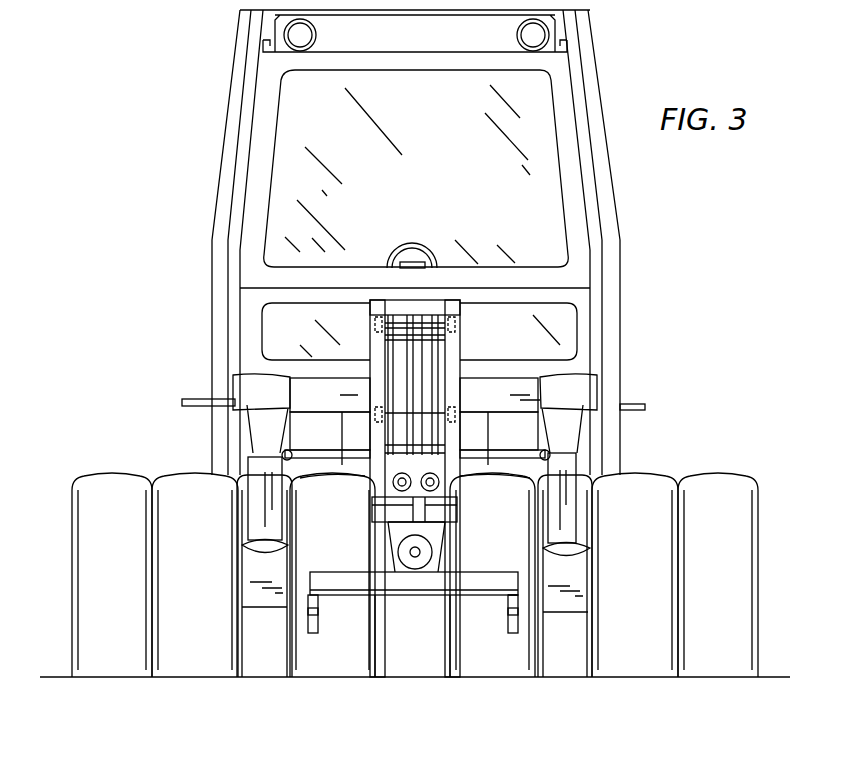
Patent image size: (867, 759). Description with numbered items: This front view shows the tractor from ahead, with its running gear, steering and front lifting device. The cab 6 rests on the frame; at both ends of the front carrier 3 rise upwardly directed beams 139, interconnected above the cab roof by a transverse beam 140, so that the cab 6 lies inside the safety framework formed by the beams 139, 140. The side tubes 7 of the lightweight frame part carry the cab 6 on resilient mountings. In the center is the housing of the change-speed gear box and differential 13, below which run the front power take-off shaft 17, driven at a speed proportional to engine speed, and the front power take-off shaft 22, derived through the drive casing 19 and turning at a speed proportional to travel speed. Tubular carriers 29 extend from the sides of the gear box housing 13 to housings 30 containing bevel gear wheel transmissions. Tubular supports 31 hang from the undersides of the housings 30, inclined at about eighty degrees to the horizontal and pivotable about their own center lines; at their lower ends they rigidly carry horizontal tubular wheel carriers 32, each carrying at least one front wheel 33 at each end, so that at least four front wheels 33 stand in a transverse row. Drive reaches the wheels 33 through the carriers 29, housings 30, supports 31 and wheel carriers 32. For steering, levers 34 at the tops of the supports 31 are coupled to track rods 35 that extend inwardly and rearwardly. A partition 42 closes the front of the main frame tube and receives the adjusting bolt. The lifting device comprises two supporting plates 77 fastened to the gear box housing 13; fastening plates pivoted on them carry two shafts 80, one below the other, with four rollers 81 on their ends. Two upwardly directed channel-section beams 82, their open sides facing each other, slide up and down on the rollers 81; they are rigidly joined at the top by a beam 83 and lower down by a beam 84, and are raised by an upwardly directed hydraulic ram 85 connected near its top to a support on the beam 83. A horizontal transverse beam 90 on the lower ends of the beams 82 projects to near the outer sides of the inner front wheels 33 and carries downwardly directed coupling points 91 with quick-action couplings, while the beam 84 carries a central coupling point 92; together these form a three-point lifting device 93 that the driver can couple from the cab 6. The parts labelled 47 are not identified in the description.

The carrier 3 is at (393, 566).
The cab 6 is at (258, 180).
The tube 7 is at (203, 400).
The change-speed gear box and differential 13 is at (415, 567).
The front power take-off shaft 17 is at (438, 484).
The drive casing 19 is at (352, 427).
The front power take-off shaft 22 is at (393, 485).
The tubular carrier 29 is at (305, 378).
The housing of gear wheel transmission 30 is at (260, 385).
The tubular support 31 is at (257, 498).
The wheel carrier 32 is at (247, 597).
The front wheel 33 is at (165, 548).
The lever 34 is at (257, 432).
The track rod 35 is at (320, 458).
The partition 42 is at (390, 538).
The wheel 47 is at (102, 485).
The supporting plate 77 is at (428, 358).
The shaft 80 is at (420, 325).
The roller 81 is at (374, 324).
The channel-section beam 82 is at (377, 437).
The beam 83 is at (410, 282).
The beam 84 is at (443, 513).
The hydraulic ram 85 is at (386, 340).
The horizontal transverse beam 90 is at (500, 583).
The coupling point 91 is at (318, 623).
The coupling point 92 is at (413, 510).
The three-point lifting device 93 is at (437, 605).
The upwardly directed beam 139 is at (230, 143).
The transverse beam 140 is at (262, 13).